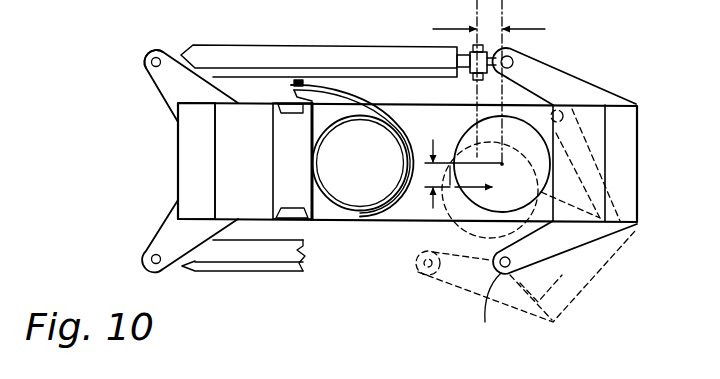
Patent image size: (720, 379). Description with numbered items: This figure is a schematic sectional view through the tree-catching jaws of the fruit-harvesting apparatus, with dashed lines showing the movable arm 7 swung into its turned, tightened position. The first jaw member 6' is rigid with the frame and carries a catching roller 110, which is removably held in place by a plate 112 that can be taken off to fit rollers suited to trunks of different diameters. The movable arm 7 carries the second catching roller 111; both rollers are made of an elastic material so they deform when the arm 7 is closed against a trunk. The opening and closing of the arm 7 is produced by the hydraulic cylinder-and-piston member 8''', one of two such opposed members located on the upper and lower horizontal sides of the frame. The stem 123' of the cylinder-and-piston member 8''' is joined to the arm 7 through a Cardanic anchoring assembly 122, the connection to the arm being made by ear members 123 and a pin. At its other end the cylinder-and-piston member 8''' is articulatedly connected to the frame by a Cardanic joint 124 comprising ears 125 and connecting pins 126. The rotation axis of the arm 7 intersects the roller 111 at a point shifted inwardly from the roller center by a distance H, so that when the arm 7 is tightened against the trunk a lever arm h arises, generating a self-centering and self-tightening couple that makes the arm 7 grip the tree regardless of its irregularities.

The movable arm 7 is at (647, 152).
The first jaw member 6' is at (170, 161).
The plate 112 is at (292, 208).
The catching roller 110 is at (348, 221).
The catching roller 111 is at (462, 135).
The hydraulic cylinder-and-piston member 8''' is at (319, 44).
The stem 123' is at (426, 37).
The Cardanic anchoring assembly 122 is at (535, 47).
The ear member 123 is at (529, 198).
The ear 125 is at (168, 78).
The connecting pin 126 is at (140, 62).
The Cardanic joint 124 is at (172, 43).